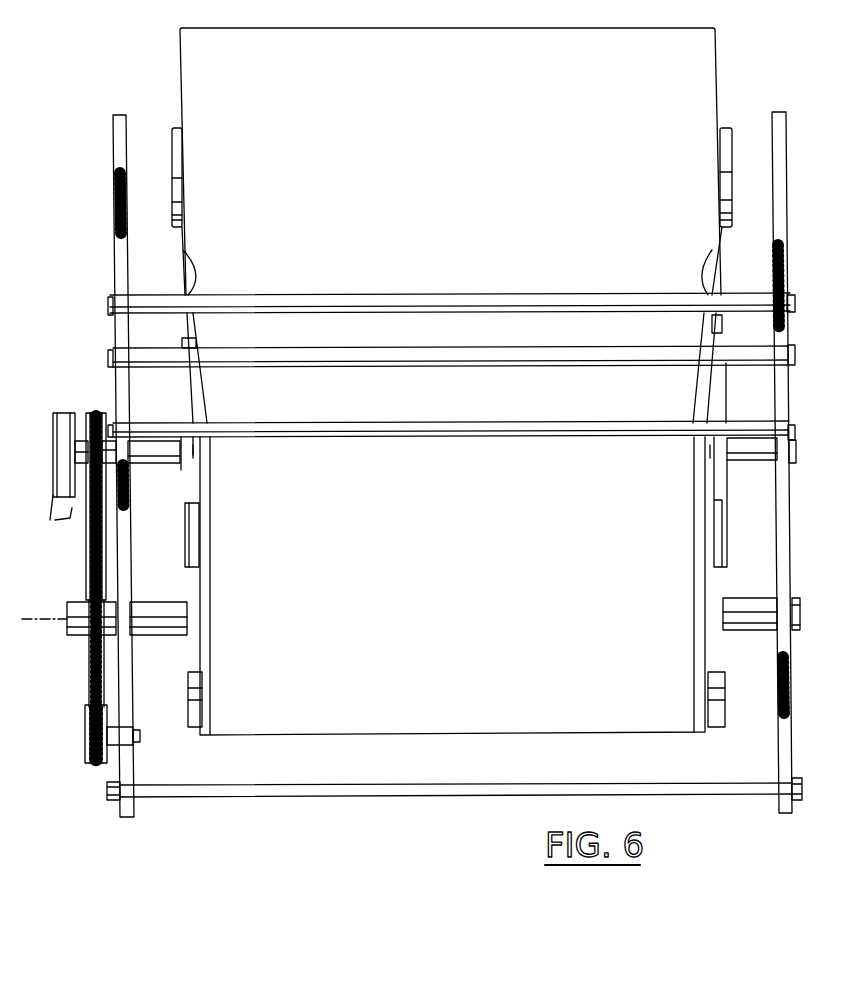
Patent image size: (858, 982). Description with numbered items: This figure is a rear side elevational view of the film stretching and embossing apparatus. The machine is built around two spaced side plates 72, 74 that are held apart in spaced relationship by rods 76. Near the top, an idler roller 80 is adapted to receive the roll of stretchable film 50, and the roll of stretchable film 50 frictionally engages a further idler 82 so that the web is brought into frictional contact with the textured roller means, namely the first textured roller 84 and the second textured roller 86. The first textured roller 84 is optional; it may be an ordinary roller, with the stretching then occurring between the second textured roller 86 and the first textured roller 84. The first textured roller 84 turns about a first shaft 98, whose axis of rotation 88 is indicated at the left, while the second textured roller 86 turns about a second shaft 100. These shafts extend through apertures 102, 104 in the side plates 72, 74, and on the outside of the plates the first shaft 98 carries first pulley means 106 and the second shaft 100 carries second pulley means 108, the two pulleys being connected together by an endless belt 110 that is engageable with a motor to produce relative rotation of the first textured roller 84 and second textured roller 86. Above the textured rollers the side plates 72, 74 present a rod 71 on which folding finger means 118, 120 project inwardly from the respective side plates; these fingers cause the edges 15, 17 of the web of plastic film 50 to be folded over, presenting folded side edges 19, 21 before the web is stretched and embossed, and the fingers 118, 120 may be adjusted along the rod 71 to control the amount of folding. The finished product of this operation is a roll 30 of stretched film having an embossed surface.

The roll of stretchable film 50 is at (195, 62).
The edge of the web of plastic film 15 is at (185, 258).
The edge of the web of plastic film 17 is at (712, 258).
The side plate 72 is at (118, 333).
The side plate 74 is at (787, 542).
The idler roller 80 is at (145, 300).
The idler 82 is at (460, 355).
The rod 71 is at (462, 428).
The rods 76 is at (420, 786).
The roll of stretched film 30 is at (220, 393).
The folding side edge 21 is at (702, 393).
The folding side edge 19 is at (197, 466).
The second textured roller 86 is at (190, 492).
The first textured roller 84 is at (190, 697).
The folding finger means 118 is at (213, 455).
The folding finger means 120 is at (705, 457).
The second shaft 100 is at (153, 450).
The aperture 104 is at (790, 455).
The first shaft 98 is at (157, 622).
The aperture 102 is at (795, 630).
The axis of rotation 88 is at (58, 620).
The endless belt 110 is at (62, 410).
The second pulley means 108 is at (50, 490).
The first pulley means 106 is at (86, 668).